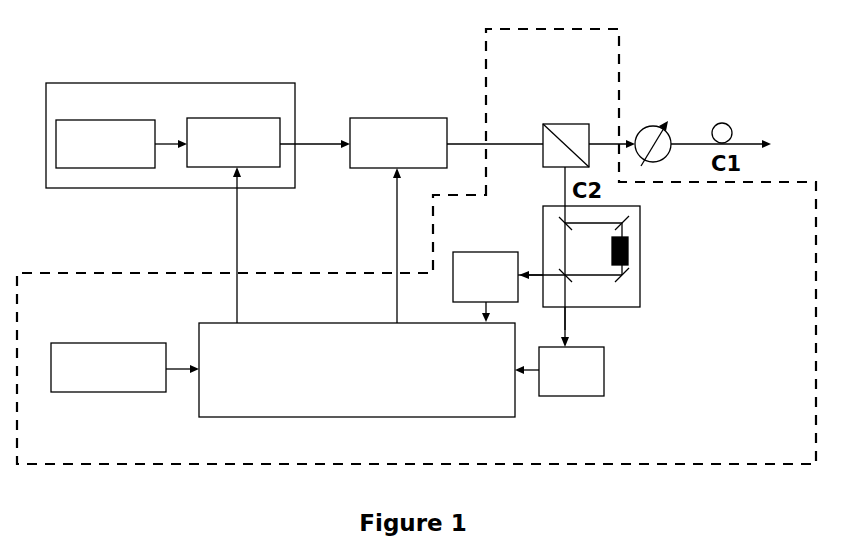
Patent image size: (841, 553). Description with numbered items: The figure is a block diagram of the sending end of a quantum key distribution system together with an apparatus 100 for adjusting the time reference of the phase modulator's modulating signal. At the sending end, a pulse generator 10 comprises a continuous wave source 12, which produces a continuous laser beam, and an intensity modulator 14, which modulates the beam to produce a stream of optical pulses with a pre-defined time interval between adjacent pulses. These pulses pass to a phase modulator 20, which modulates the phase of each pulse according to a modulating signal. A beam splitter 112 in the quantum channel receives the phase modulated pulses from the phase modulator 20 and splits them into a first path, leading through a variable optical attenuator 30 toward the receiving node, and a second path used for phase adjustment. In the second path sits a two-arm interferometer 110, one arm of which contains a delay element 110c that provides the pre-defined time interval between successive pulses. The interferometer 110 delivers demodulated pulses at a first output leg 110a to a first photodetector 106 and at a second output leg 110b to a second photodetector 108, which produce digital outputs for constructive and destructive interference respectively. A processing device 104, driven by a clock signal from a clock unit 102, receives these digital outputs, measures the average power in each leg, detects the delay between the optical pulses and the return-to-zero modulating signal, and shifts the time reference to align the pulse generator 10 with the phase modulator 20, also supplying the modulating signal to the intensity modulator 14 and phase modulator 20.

The pulse generator 10 is at (170, 135).
The continuous wave source 12 is at (105, 144).
The intensity modulator 14 is at (233, 142).
The phase modulator 20 is at (398, 143).
The variable optical attenuator 30 is at (652, 118).
The apparatus 100 is at (416, 246).
The clock unit 102 is at (108, 367).
The processing device 104 is at (357, 370).
The first photodetector 106 is at (485, 277).
The second photodetector 108 is at (571, 371).
The two-arm interferometer 110 is at (649, 222).
The first output leg 110a is at (530, 259).
The second output leg 110b is at (575, 320).
The delay element 110c is at (637, 255).
The beam splitter 112 is at (565, 115).